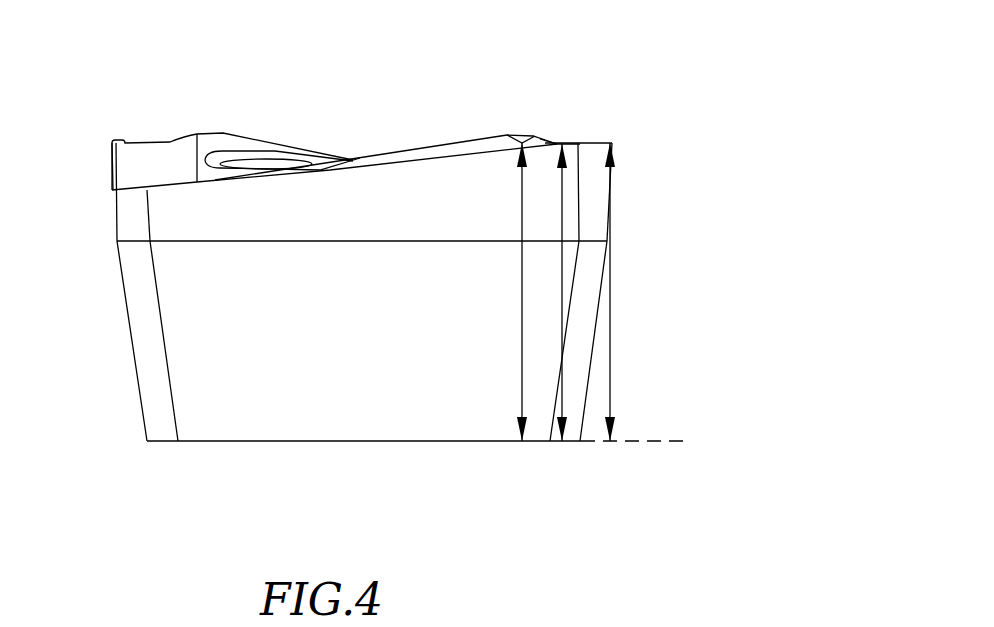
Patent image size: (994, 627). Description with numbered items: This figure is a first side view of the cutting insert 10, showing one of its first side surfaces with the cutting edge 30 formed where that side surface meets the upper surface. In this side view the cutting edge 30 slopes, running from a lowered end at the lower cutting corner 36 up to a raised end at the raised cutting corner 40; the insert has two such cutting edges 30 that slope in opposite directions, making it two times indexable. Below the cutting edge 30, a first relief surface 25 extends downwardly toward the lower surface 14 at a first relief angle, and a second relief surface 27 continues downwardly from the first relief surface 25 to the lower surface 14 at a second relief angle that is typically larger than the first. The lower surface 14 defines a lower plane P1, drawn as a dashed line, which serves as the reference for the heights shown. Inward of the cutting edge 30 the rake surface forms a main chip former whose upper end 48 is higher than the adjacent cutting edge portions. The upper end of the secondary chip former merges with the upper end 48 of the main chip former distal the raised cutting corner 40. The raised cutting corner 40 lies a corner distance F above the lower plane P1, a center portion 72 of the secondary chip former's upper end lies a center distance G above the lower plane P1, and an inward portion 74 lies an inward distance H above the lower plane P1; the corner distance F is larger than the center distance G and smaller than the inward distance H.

The cutting insert 10 is at (429, 260).
The lower surface 14 is at (225, 441).
The first relief surface 25 is at (212, 213).
The second relief surface 27 is at (202, 305).
The cutting edge 30 is at (223, 137).
The lower cutting corner 36 is at (112, 190).
The raised cutting corner 40 is at (615, 142).
The upper end of the main chip former 48 is at (442, 147).
The center portion of the upper end of the secondary chip former 72 is at (558, 140).
The inward portion of the upper end of the secondary chip former 74 is at (523, 133).
The inward distance H is at (522, 390).
The center distance G is at (562, 395).
The corner distance F is at (612, 332).
The lower plane P1 is at (632, 440).